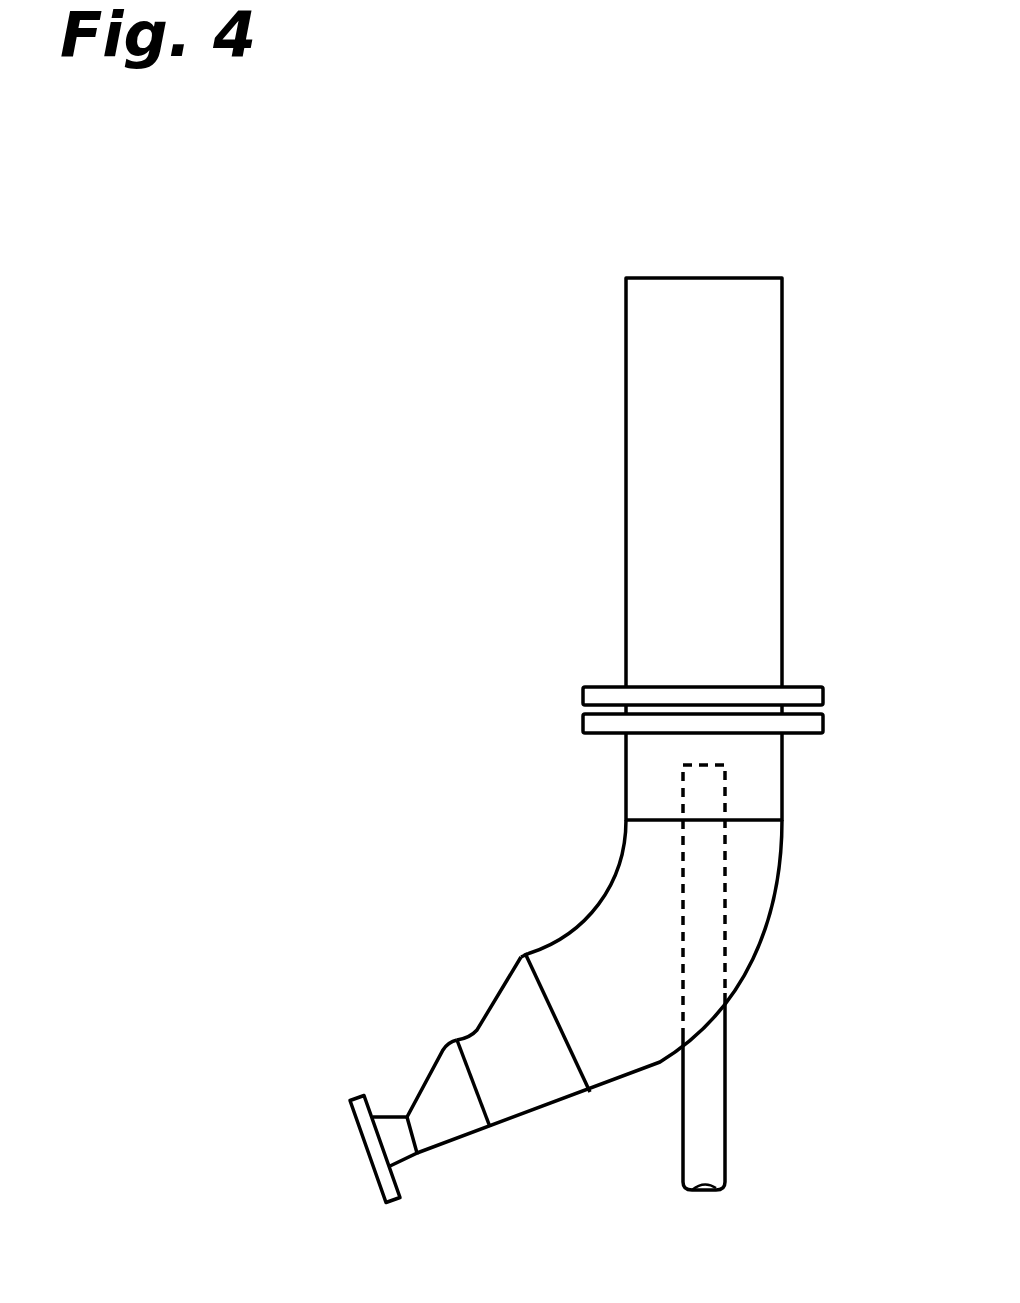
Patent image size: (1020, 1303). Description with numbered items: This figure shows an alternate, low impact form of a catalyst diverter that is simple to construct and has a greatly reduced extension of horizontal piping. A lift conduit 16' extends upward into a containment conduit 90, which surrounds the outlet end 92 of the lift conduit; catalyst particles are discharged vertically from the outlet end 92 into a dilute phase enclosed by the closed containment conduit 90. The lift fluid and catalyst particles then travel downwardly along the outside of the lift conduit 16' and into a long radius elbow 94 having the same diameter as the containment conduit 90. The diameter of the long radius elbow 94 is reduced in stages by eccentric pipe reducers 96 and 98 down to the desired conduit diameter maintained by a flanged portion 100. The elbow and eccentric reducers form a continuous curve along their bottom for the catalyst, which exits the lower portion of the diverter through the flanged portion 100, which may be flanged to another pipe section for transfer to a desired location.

The containment conduit 90 is at (782, 490).
The outlet end 92 is at (725, 765).
The long radius elbow 94 is at (607, 890).
The eccentric pipe reducer 96 is at (498, 990).
The eccentric pipe reducer 98 is at (433, 1072).
The flanged portion 100 is at (403, 1173).
The lift conduit 16' is at (756, 1091).